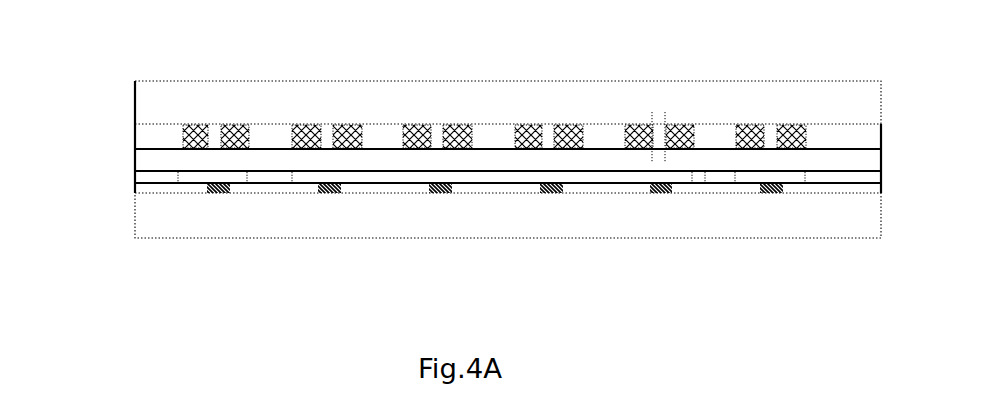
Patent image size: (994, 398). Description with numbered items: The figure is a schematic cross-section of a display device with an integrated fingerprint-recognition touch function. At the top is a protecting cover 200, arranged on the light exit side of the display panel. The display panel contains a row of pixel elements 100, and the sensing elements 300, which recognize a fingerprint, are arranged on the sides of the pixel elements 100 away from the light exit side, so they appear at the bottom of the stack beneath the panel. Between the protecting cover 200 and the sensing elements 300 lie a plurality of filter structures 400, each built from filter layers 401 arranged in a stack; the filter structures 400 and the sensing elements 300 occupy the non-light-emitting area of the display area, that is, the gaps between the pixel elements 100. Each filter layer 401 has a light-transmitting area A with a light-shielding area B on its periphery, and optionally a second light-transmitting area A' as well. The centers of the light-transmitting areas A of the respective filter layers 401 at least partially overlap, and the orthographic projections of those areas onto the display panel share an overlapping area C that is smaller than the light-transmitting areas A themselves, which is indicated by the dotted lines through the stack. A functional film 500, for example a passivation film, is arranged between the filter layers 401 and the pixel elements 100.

The pixel elements 100 is at (840, 176).
The protecting cover 200 is at (847, 110).
The sensing elements 300 is at (772, 193).
The filter structures 400 is at (411, 140).
The filter layer 401 is at (183, 131).
The functional film 500 is at (840, 152).
The light-transmitting area A is at (572, 77).
The second light-transmitting area A' is at (748, 76).
The light-shielding area B is at (517, 128).
The overlapping area C is at (658, 156).